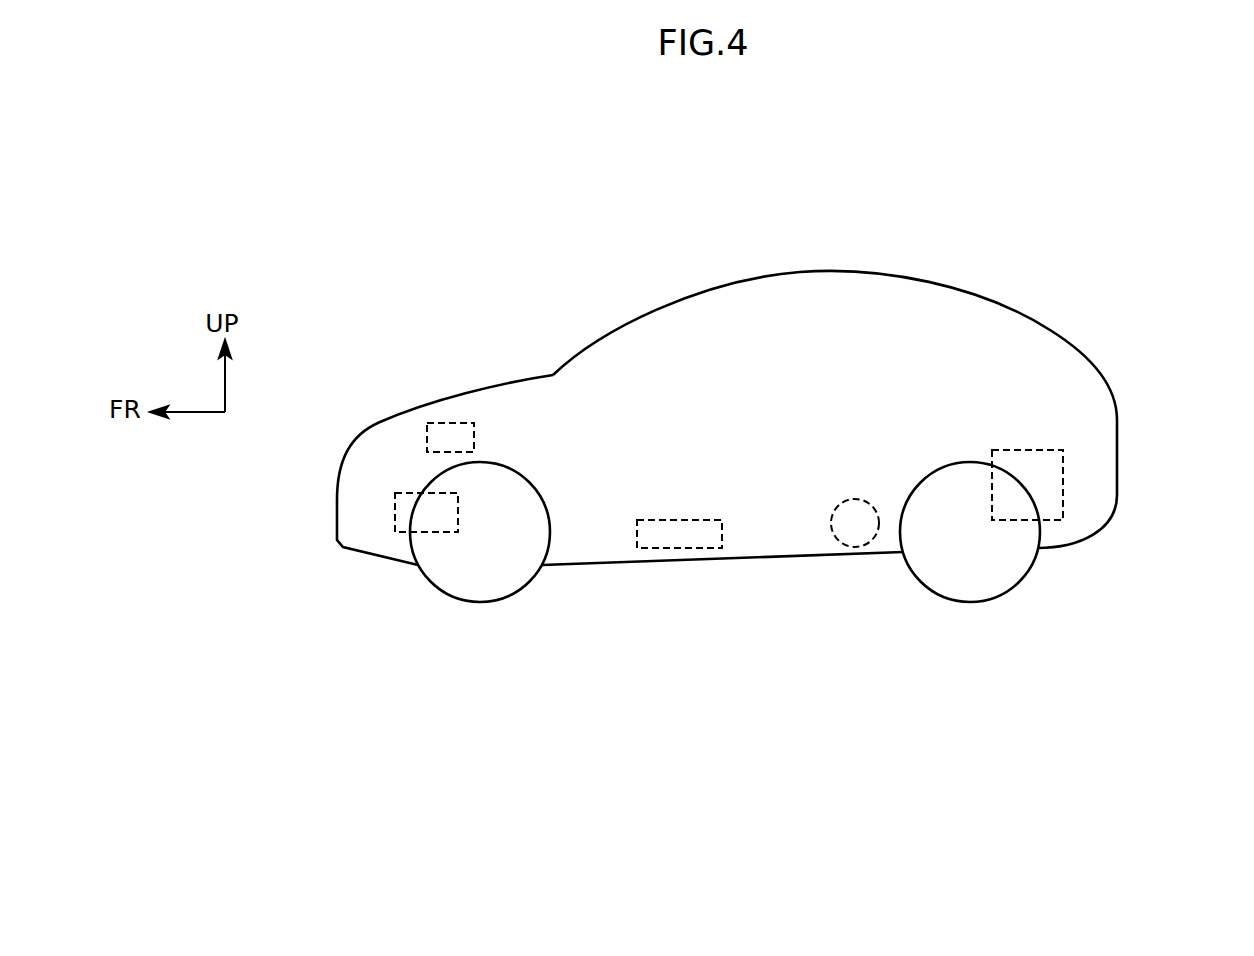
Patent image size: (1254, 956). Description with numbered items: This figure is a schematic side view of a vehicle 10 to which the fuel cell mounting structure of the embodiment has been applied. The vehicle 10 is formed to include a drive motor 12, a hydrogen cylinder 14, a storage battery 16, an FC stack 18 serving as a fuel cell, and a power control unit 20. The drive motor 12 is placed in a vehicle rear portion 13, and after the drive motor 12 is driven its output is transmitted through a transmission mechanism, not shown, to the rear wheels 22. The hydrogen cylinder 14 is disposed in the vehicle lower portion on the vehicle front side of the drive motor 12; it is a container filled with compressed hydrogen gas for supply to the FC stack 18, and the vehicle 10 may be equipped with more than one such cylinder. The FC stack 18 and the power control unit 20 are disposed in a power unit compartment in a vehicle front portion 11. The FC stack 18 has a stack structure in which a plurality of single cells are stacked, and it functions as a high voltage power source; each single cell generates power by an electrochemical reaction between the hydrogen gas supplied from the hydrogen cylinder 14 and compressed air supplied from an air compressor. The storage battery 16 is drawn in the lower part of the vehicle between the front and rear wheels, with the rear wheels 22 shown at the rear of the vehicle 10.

The vehicle 10 is at (937, 270).
The vehicle front portion 11 is at (516, 367).
The drive motor 12 is at (1063, 477).
The vehicle rear portion 13 is at (1065, 438).
The hydrogen cylinder 14 is at (838, 540).
The storage battery 16 is at (672, 548).
The FC stack 18 is at (433, 532).
The power control unit 20 is at (450, 423).
The rear wheels 22 is at (1018, 587).